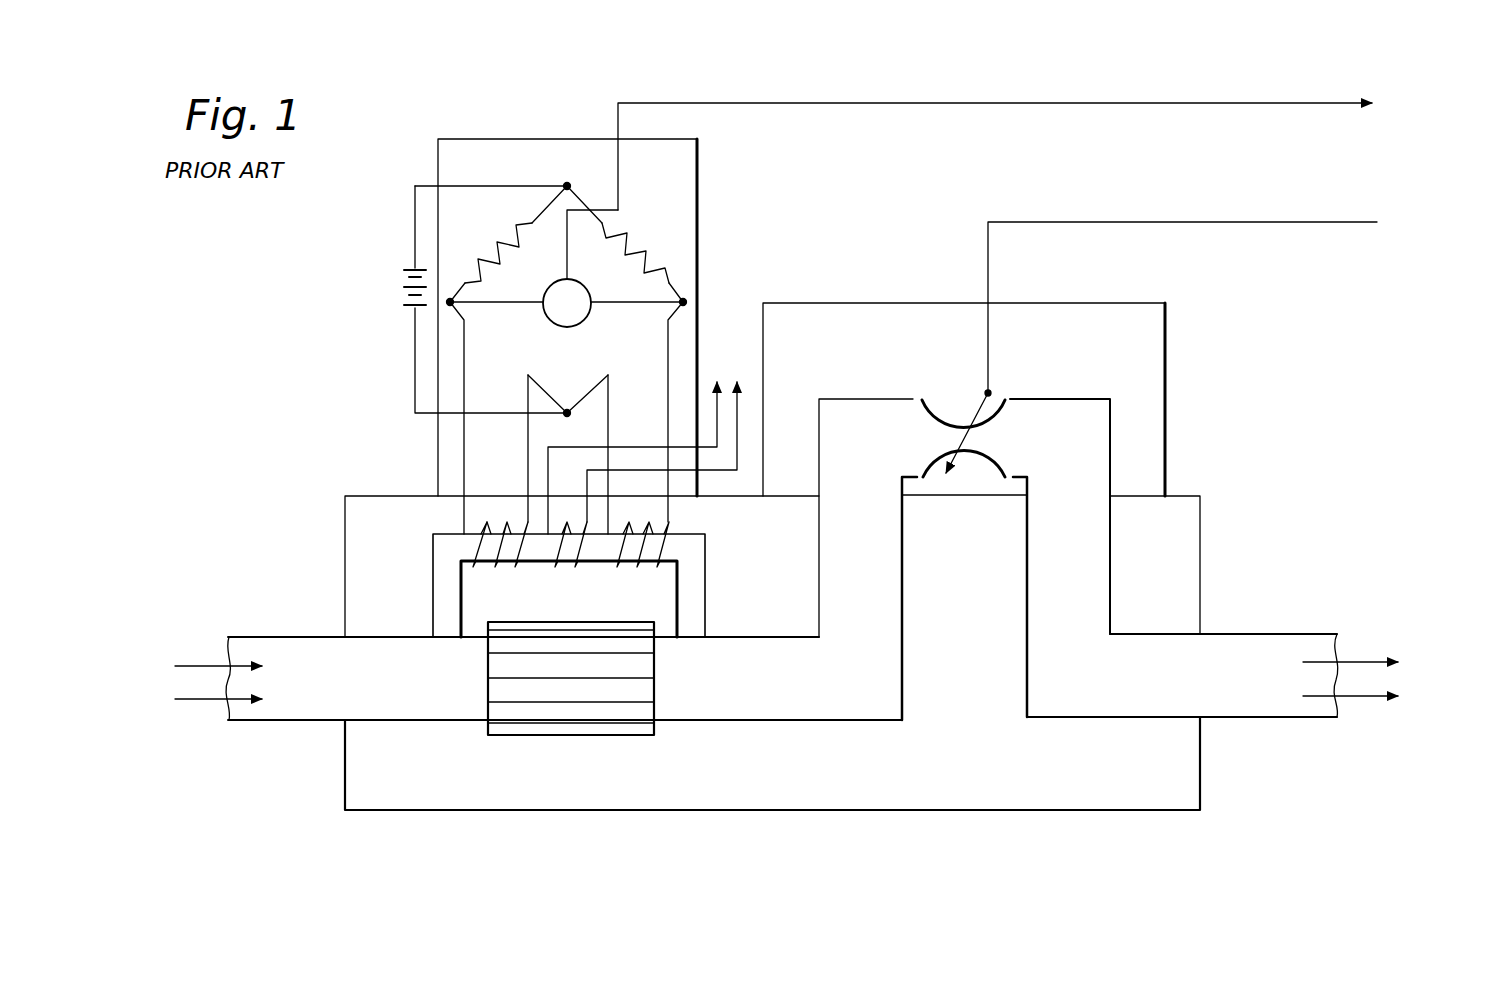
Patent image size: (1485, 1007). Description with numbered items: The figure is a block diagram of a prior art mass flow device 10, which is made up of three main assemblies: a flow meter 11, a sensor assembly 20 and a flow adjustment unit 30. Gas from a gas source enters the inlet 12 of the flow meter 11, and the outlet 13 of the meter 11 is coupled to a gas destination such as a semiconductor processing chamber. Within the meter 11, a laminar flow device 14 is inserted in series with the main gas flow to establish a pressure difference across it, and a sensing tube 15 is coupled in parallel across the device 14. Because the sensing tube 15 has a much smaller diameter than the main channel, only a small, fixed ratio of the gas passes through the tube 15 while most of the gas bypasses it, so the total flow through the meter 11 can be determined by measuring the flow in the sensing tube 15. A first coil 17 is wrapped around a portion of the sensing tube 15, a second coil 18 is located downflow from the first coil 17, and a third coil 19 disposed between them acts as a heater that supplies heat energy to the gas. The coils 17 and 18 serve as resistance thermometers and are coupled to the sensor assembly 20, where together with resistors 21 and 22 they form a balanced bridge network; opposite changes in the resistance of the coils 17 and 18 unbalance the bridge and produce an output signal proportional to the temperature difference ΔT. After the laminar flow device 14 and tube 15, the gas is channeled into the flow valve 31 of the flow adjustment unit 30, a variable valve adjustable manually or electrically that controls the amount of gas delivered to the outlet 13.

The mass flow device 10 is at (356, 248).
The flow meter 11 is at (345, 798).
The inlet 12 is at (305, 637).
The outlet 13 is at (1265, 717).
The laminar flow device 14 is at (570, 735).
The sensing tube 15 is at (435, 610).
The first coil 17 is at (478, 570).
The second coil 18 is at (612, 568).
The third coil 19 is at (573, 568).
The sensor assembly 20 is at (482, 139).
The resistor 21 is at (493, 240).
The resistor 22 is at (638, 237).
The flow adjustment unit 30 is at (1165, 357).
The flow valve 31 is at (955, 420).